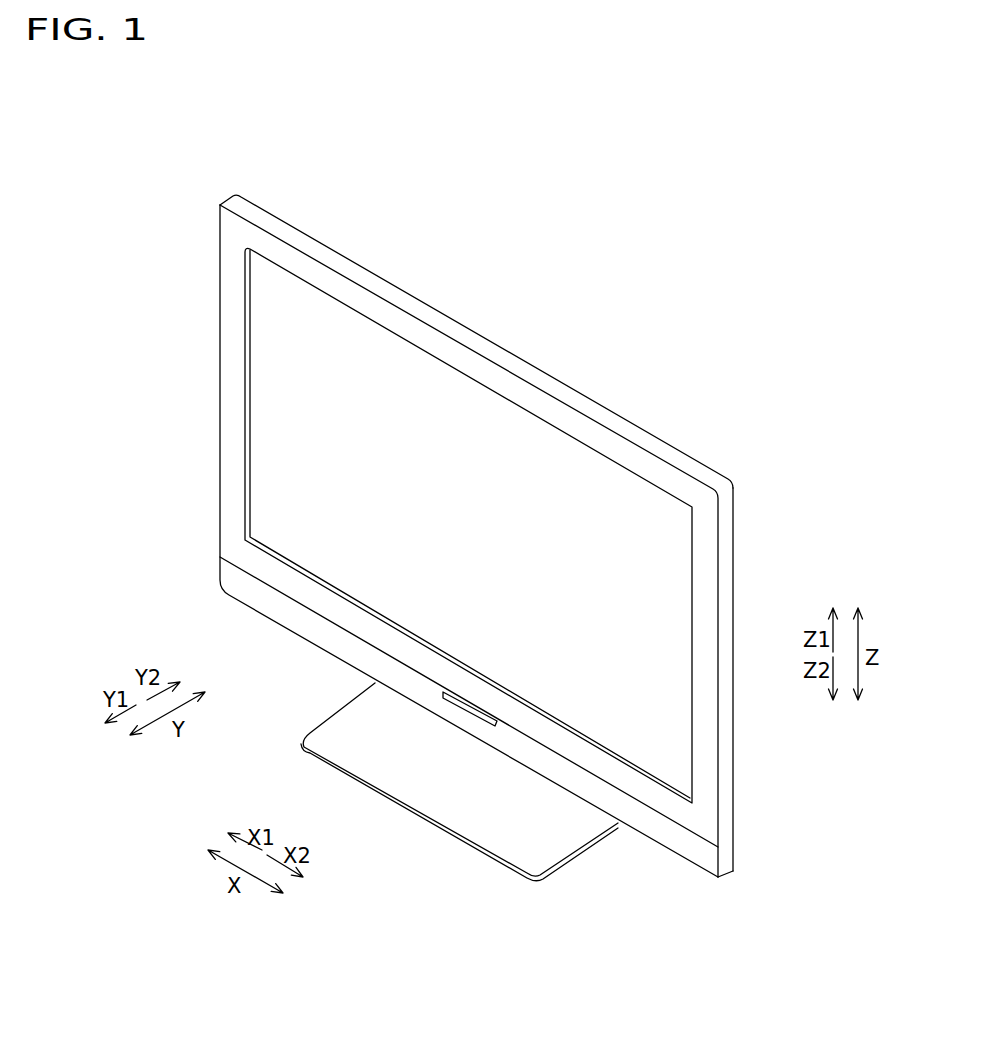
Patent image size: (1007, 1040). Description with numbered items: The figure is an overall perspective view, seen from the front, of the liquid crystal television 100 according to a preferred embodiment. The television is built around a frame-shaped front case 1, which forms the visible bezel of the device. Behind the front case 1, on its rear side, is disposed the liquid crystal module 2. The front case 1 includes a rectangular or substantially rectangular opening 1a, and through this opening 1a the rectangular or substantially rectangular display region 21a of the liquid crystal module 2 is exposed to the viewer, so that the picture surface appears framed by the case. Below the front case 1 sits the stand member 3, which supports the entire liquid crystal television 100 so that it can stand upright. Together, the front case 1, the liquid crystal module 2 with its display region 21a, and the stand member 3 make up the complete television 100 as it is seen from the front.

The liquid crystal television 100 is at (435, 541).
The front case 1 is at (427, 536).
The opening 1a is at (492, 388).
The liquid crystal module 2 is at (382, 525).
The display region 21a is at (272, 424).
The stand member 3 is at (467, 792).